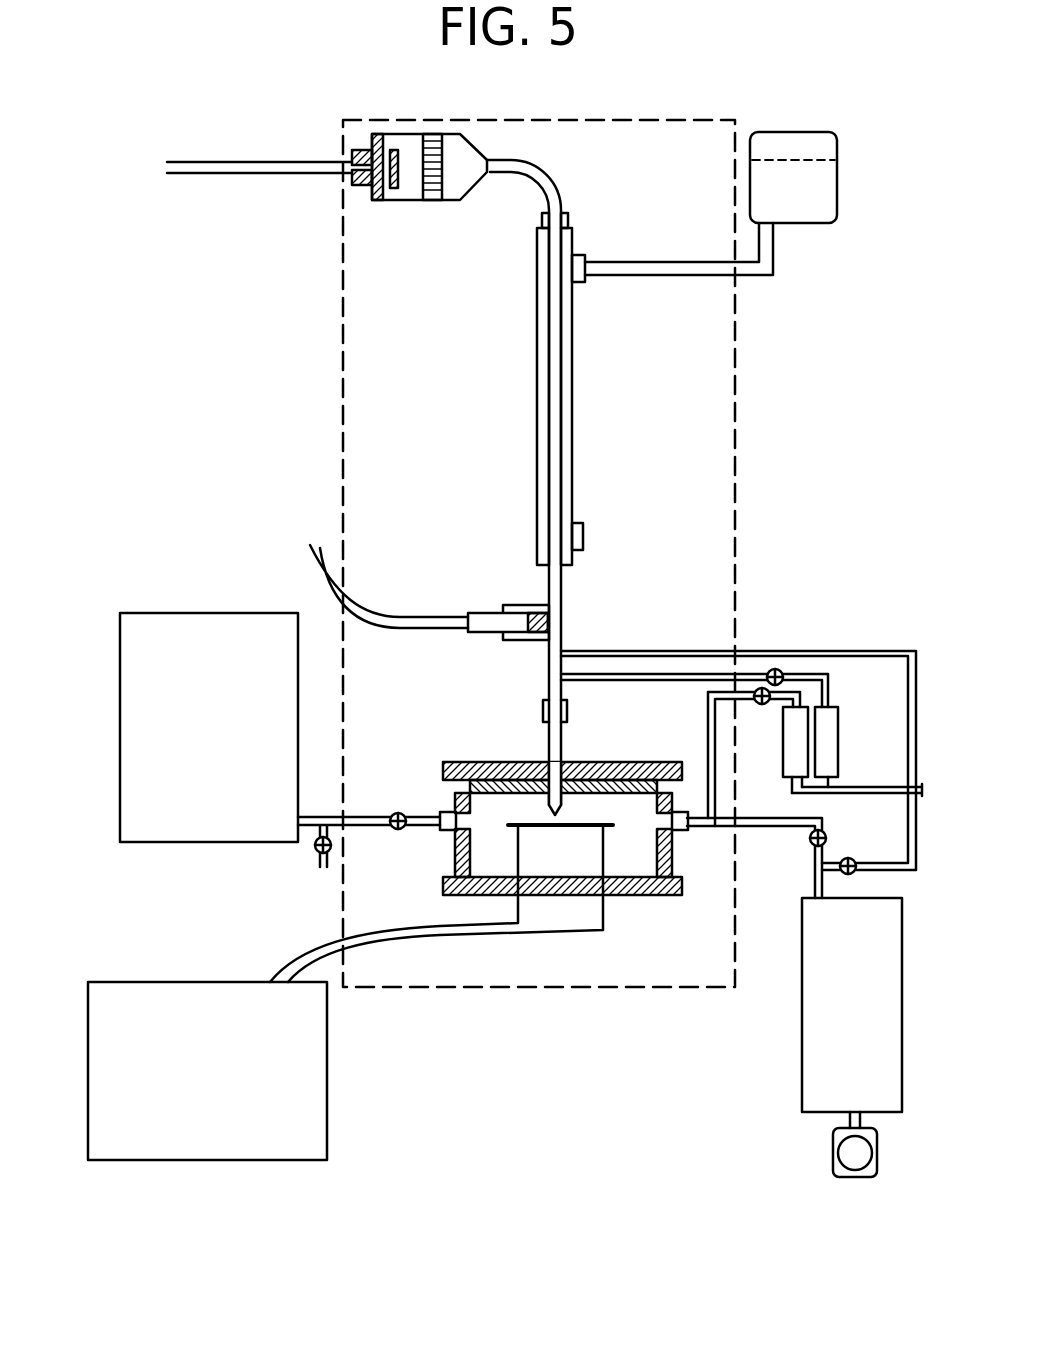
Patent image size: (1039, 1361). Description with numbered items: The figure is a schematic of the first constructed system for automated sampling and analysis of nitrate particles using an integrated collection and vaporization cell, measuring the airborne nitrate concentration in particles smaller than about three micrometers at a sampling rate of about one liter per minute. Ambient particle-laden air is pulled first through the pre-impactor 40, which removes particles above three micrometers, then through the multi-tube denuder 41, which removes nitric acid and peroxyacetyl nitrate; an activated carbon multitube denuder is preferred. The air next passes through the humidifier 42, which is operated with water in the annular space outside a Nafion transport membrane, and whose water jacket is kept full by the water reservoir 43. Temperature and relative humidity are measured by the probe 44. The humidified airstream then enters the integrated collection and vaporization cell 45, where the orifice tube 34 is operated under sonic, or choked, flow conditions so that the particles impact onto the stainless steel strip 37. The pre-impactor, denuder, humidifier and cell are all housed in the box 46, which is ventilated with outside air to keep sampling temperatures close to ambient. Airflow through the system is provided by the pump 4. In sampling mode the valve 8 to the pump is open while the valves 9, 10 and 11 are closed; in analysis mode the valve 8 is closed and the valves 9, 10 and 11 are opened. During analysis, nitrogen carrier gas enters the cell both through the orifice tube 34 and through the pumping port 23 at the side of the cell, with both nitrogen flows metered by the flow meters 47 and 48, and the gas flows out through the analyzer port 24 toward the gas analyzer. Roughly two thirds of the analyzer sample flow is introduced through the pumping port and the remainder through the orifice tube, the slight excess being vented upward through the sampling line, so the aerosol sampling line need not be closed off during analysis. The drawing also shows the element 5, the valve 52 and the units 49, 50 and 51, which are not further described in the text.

The pump 4 is at (845, 1157).
The outlet line 5 is at (845, 791).
The valve 8 is at (815, 845).
The valve 9 is at (767, 700).
The valve 10 is at (779, 674).
The valve 11 is at (397, 813).
The pumping port 23 is at (688, 828).
The analyzer port 24 is at (449, 826).
The orifice tube 34 is at (546, 818).
The stainless steel strip 37 is at (583, 818).
The pre-impactor 40 is at (373, 192).
The multi-tube denuder 41 is at (434, 196).
The humidifier 42 is at (541, 323).
The water reservoir 43 is at (803, 213).
The probe 44 is at (495, 622).
The integrated collection and vaporization cell 45 is at (497, 761).
The box 46 is at (737, 373).
The flow meter 47 is at (793, 758).
The flow meter 48 is at (832, 738).
The buffer supply 49 is at (206, 613).
The detector unit 50 is at (311, 1053).
The waste reservoir 51 is at (822, 997).
The valve 52 is at (853, 860).